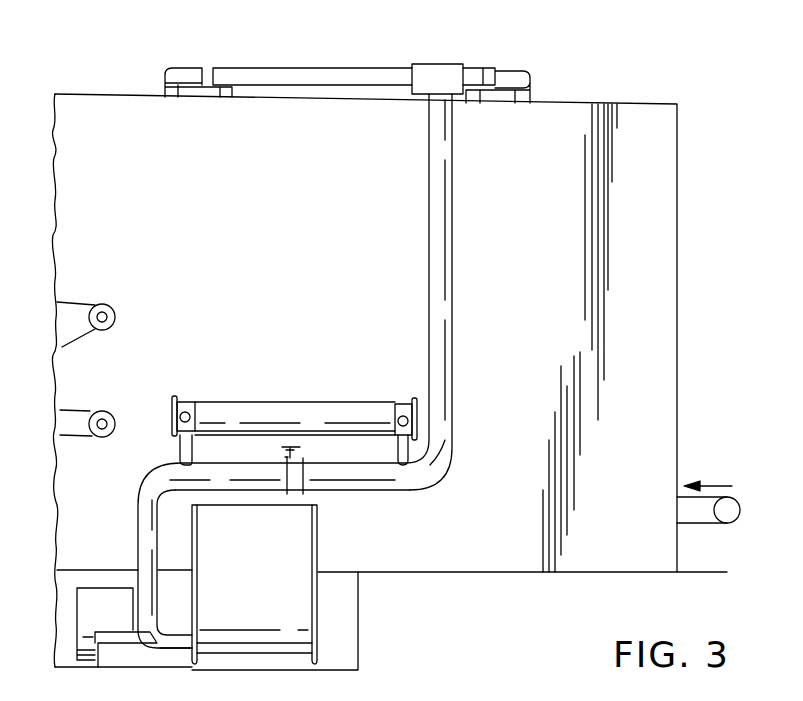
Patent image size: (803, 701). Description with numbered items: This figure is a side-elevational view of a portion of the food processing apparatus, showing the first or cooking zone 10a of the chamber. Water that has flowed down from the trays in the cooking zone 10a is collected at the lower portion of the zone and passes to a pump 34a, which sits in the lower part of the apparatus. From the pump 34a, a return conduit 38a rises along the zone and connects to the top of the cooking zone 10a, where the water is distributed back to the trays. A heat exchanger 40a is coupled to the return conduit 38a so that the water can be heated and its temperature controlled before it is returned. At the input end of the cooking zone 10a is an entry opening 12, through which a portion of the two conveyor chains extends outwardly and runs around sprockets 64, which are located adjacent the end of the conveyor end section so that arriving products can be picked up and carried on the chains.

The first zone 10a is at (623, 96).
The return conduit 38a is at (442, 265).
The heat exchanger 40a is at (317, 412).
The pump 34a is at (282, 547).
The entry opening 12 is at (685, 462).
The sprockets 64 is at (731, 508).